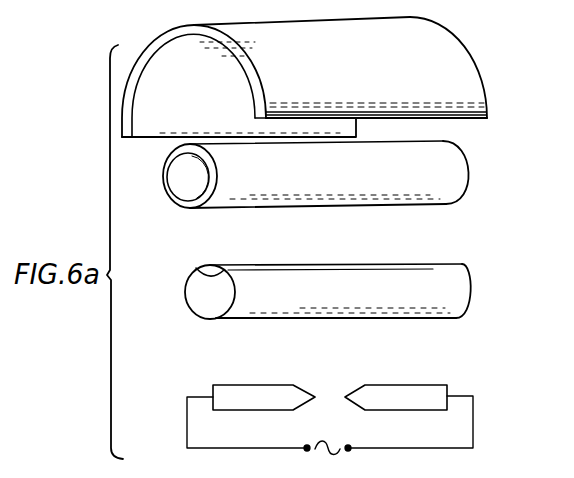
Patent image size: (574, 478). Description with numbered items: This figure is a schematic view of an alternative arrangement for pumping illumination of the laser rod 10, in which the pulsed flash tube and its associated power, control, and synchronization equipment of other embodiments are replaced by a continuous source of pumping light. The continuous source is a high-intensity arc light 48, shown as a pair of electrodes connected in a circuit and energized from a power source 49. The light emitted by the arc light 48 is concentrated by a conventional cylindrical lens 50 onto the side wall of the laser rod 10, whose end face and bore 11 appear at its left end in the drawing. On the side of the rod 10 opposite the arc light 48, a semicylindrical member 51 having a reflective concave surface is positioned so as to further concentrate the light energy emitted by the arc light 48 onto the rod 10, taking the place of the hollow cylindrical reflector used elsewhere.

The semicylindrical member 51 is at (168, 33).
The laser rod 10 is at (301, 193).
The bore of cylindrical member 11 is at (182, 174).
The cylindrical lens 50 is at (372, 320).
The high-intensity arc light 48 is at (242, 383).
The power source 49 is at (341, 456).